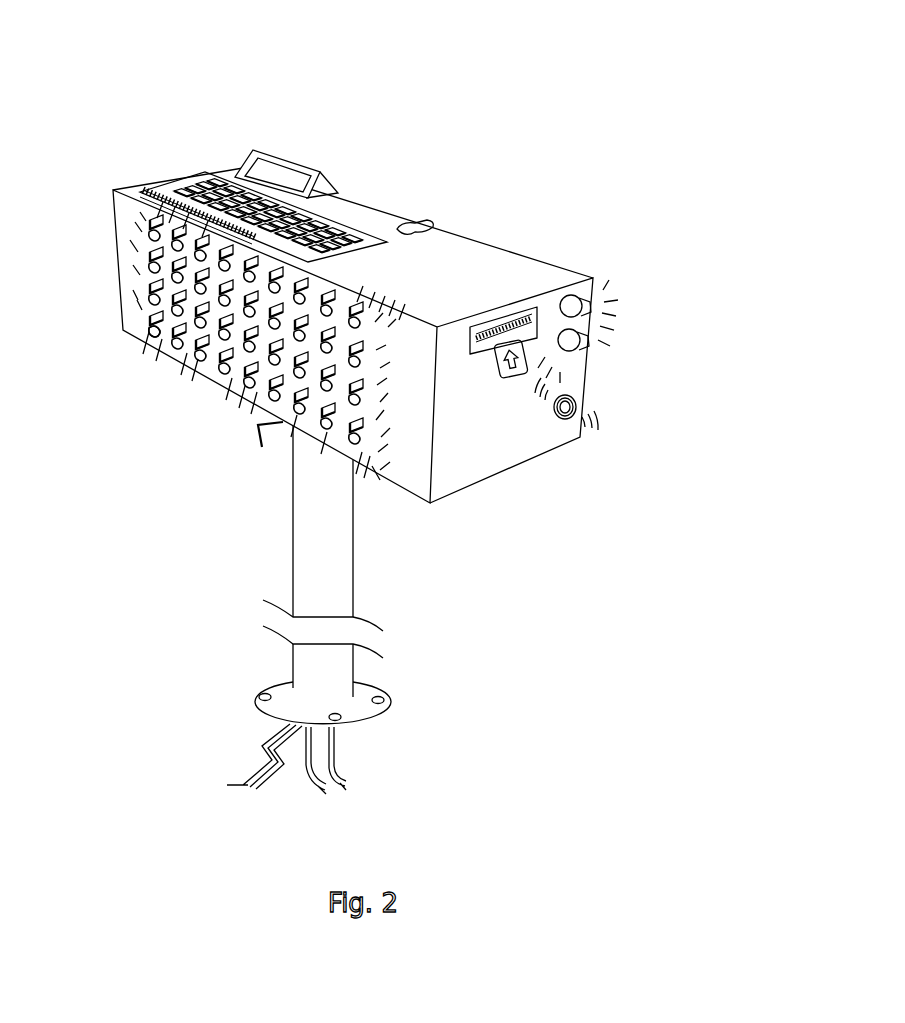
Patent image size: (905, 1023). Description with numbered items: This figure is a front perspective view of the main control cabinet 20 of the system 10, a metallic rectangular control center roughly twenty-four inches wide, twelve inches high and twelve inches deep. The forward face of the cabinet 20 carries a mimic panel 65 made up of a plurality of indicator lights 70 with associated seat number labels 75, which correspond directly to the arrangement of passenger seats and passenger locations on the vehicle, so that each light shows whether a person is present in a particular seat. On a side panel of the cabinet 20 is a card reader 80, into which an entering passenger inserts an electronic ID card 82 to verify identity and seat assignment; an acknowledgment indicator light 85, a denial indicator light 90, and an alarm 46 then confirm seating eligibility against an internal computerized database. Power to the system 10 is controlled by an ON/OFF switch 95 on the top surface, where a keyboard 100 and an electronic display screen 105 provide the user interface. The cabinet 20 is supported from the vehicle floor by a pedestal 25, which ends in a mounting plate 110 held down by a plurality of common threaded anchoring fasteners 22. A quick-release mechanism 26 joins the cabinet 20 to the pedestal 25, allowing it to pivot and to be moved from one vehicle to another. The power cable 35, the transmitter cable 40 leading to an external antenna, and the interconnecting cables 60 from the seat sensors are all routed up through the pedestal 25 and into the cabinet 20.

The system 10 is at (615, 130).
The main control cabinet 20 is at (513, 438).
The threaded anchoring fasteners 22 is at (262, 693).
The pedestal 25 is at (318, 574).
The quick-release mechanism 26 is at (253, 437).
The power cable 35 is at (313, 785).
The transmitter cable 40 is at (333, 777).
The alarm 46 is at (555, 416).
The interconnecting cables 60 is at (250, 788).
The mimic panel 65 is at (230, 377).
The indicator lights 70 is at (152, 333).
The seat number labels 75 is at (158, 318).
The card reader 80 is at (520, 310).
The electronic ID card 82 is at (497, 368).
The acknowledgment indicator light 85 is at (583, 313).
The denial indicator light 90 is at (585, 353).
The ON/OFF switch 95 is at (430, 218).
The keyboard 100 is at (185, 173).
The electronic display screen 105 is at (290, 173).
The mounting plate 110 is at (287, 708).